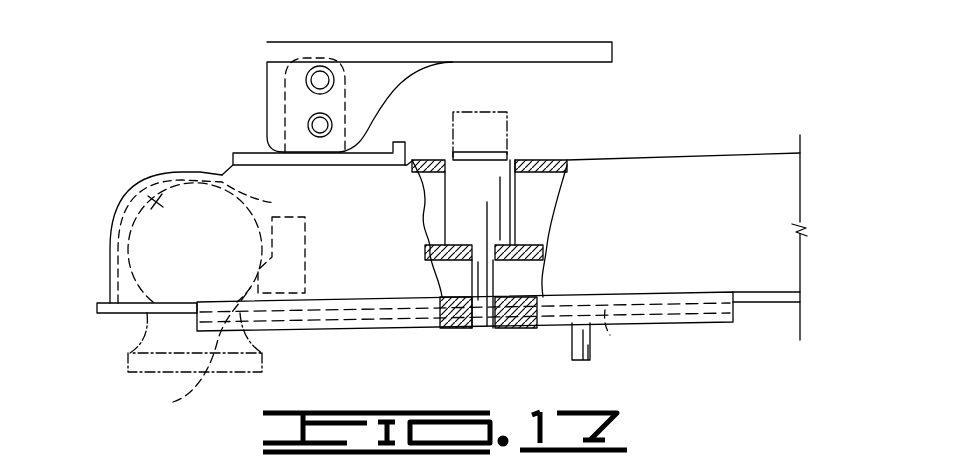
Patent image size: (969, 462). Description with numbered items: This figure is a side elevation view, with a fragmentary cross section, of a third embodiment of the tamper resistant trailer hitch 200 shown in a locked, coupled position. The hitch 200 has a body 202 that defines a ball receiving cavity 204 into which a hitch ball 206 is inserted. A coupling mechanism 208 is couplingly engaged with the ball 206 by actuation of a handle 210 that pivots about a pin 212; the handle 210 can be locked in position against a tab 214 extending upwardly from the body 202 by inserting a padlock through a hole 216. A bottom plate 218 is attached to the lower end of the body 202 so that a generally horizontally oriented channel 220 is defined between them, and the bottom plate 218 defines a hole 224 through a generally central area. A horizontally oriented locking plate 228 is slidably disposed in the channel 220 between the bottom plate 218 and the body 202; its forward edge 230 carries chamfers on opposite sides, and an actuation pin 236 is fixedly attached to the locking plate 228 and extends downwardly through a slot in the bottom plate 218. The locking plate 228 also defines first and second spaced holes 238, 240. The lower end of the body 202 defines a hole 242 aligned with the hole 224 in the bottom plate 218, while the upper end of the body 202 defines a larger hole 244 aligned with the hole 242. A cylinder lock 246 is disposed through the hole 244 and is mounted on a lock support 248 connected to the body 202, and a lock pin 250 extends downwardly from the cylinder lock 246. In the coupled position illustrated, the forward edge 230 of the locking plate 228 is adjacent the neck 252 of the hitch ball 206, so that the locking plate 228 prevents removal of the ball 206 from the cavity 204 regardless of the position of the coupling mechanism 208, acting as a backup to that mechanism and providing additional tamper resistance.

The tamper resistant trailer hitch 200 is at (690, 93).
The body 202 is at (277, 178).
The ball receiving cavity 204 is at (127, 197).
The hitch ball 206 is at (200, 173).
The coupling mechanism 208 is at (290, 213).
The handle 210 is at (470, 52).
The pin 212 is at (322, 76).
The tab 214 is at (293, 72).
The hole 216 is at (323, 122).
The bottom plate 218 is at (333, 332).
The channel 220 is at (380, 313).
The hole 224 is at (480, 328).
The locking plate 228 is at (307, 333).
The forward edge 230 is at (185, 351).
The actuation pin 236 is at (580, 362).
The first hole 238 is at (487, 328).
The second hole 240 is at (610, 335).
The hole 242 is at (497, 293).
The larger hole 244 is at (507, 158).
The cylinder lock 246 is at (478, 112).
The lock support 248 is at (533, 253).
The lock pin 250 is at (482, 272).
The neck 252 is at (140, 328).